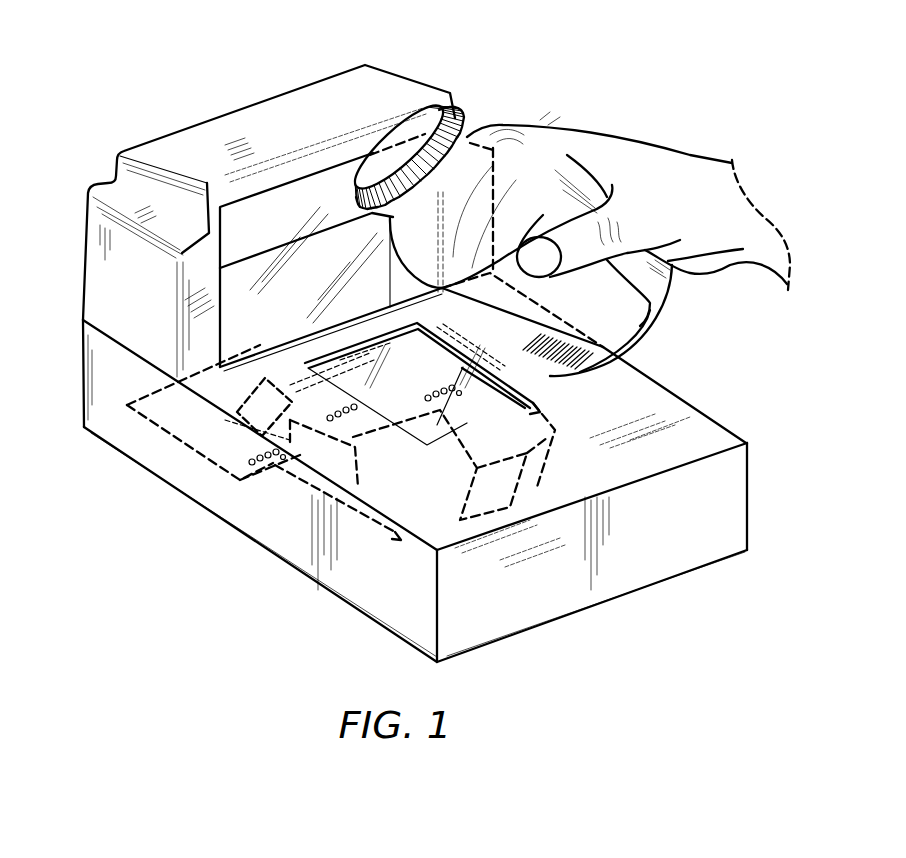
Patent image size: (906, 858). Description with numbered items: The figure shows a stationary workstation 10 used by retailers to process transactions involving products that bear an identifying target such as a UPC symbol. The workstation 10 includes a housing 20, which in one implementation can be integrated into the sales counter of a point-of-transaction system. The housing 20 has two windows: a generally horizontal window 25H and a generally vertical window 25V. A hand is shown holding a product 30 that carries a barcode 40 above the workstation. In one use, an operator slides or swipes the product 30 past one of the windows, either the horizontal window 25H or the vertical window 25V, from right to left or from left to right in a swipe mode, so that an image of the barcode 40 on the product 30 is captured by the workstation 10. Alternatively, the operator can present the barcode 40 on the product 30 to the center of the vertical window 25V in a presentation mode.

The workstation 10 is at (117, 55).
The housing 20 is at (160, 148).
The horizontal window 25H is at (112, 458).
The vertical window 25V is at (240, 282).
The product 30 is at (522, 182).
The barcode 40 is at (575, 342).